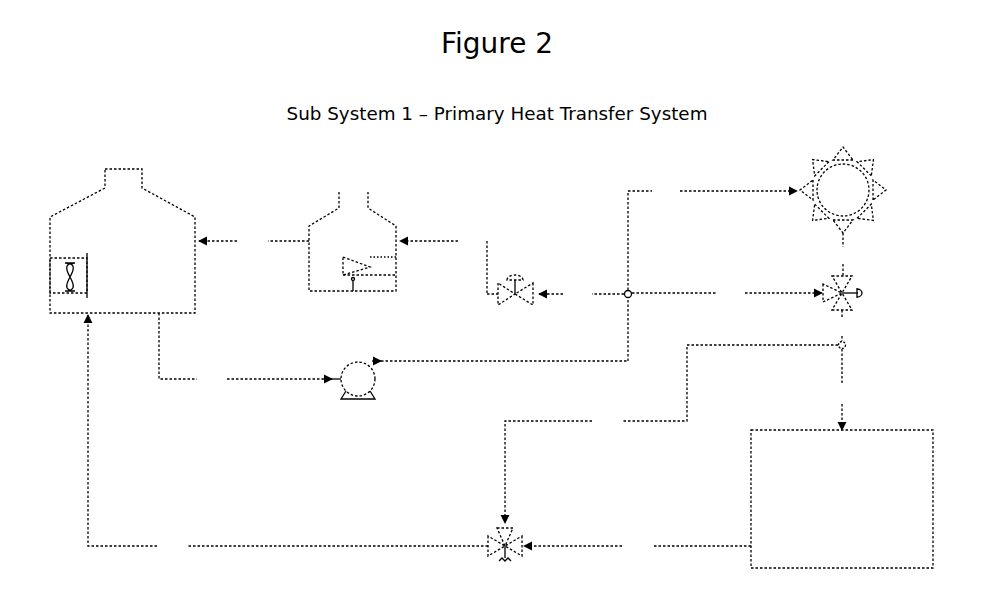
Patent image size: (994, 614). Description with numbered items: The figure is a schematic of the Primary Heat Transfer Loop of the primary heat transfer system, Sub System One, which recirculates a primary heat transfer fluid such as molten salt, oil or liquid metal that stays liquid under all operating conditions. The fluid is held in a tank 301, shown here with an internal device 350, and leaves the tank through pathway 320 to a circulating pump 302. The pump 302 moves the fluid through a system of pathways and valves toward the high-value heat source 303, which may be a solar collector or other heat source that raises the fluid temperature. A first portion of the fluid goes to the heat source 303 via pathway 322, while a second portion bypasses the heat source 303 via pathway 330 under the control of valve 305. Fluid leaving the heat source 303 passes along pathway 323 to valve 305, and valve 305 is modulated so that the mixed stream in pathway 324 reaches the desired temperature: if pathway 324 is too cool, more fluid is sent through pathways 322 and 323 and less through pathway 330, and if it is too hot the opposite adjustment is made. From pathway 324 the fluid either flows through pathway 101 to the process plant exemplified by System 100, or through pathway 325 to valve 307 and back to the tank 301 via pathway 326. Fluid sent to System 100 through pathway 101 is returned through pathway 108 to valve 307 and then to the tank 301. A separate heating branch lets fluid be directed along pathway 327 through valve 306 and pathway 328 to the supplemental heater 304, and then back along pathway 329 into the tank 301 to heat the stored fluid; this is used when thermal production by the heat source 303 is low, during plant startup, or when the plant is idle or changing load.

The tank 301 is at (122, 241).
The fan / agitator 350 is at (70, 277).
The supplemental heater 304 is at (352, 241).
The pathway 329 is at (254, 241).
The line to heater tank 304 328 is at (449, 264).
The valve 306 is at (515, 299).
The pathway 327 is at (585, 294).
The pathway 322 is at (712, 272).
The high-value heat source 303 is at (843, 190).
The pathway 323 is at (843, 254).
The valve 305 is at (828, 292).
The pathway 330 is at (727, 293).
The pathway 324 is at (842, 329).
The pathway 101 is at (842, 389).
The System 100 is at (842, 499).
The pathway 325 is at (671, 434).
The valve 307 is at (491, 551).
The pathway 108 is at (637, 546).
The pathway 326 is at (288, 434).
The tank outlet line to pump 320 is at (250, 350).
The circulating pump 302 is at (484, 380).